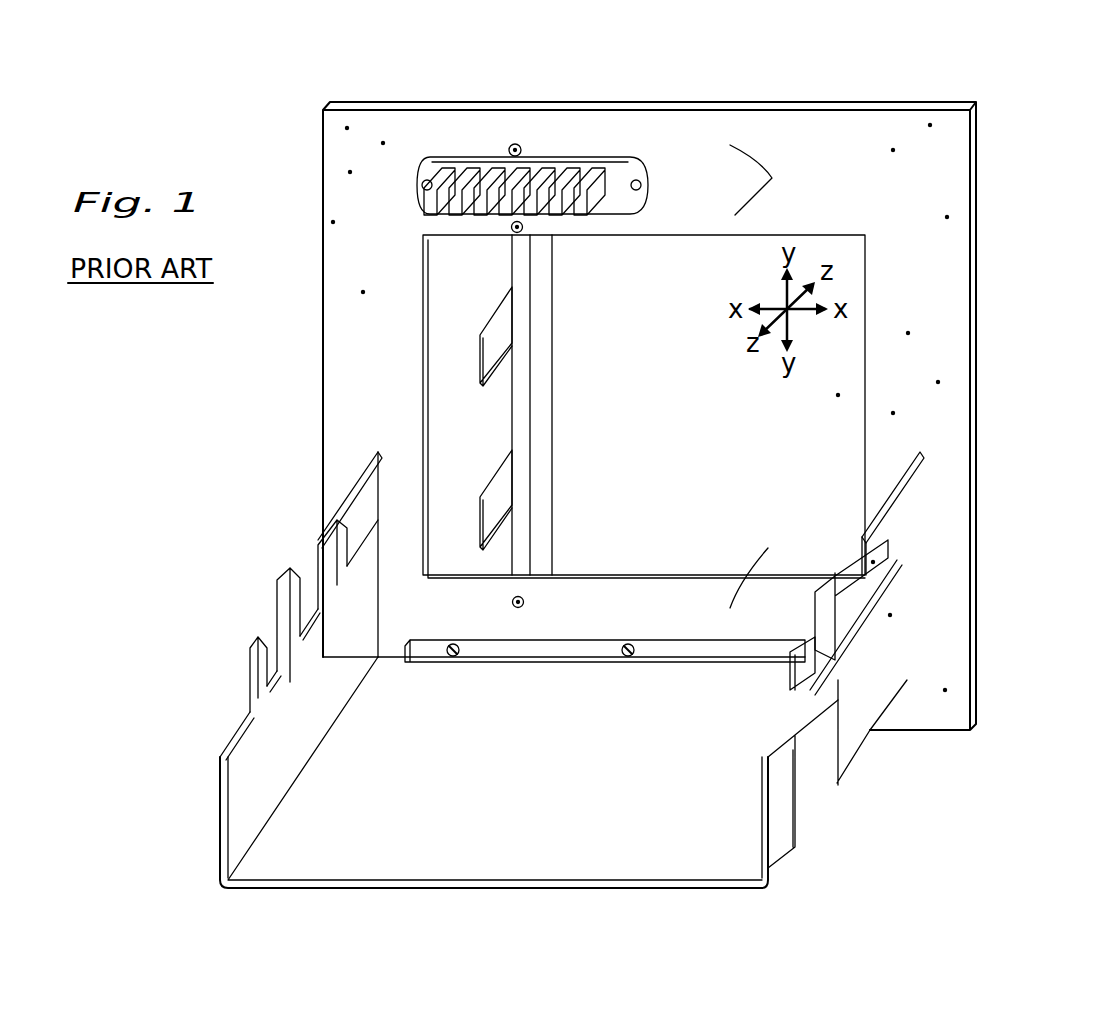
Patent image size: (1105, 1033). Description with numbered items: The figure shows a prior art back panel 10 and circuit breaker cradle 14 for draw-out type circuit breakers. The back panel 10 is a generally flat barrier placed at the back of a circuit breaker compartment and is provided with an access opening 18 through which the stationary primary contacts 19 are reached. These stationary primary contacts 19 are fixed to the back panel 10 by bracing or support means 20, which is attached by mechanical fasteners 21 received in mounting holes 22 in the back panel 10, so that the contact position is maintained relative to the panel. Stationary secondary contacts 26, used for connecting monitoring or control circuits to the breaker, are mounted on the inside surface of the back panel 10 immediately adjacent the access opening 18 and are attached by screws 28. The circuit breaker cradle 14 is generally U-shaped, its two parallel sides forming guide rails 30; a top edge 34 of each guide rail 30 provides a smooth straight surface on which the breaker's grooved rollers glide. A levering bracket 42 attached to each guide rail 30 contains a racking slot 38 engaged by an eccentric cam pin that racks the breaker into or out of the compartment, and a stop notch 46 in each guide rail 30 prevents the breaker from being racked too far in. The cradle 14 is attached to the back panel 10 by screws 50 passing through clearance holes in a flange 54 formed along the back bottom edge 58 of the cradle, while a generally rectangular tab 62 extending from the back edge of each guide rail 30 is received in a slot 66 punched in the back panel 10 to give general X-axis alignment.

The back panel 10 is at (855, 106).
The circuit breaker cradle 14 is at (548, 828).
The access opening 18 is at (865, 270).
The stationary primary contacts 19 is at (502, 468).
The support means 20 is at (513, 268).
The mechanical fasteners 21 is at (522, 230).
The mounting holes 22 is at (774, 376).
The stationary secondary contacts 26 is at (472, 172).
The screws 28 is at (430, 175).
The guide rails 30 is at (885, 640).
The top edge 34 is at (875, 598).
The racking slot 38 is at (845, 680).
The levering bracket 42 is at (818, 787).
The stop notch 46 is at (890, 545).
The screws 50 is at (627, 658).
The flange 54 is at (322, 545).
The back bottom edge 58 is at (390, 657).
The tab 62 is at (372, 465).
The slot 66 is at (373, 462).